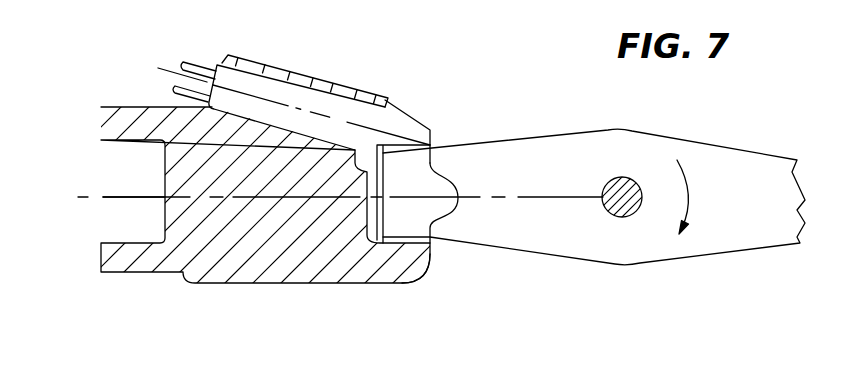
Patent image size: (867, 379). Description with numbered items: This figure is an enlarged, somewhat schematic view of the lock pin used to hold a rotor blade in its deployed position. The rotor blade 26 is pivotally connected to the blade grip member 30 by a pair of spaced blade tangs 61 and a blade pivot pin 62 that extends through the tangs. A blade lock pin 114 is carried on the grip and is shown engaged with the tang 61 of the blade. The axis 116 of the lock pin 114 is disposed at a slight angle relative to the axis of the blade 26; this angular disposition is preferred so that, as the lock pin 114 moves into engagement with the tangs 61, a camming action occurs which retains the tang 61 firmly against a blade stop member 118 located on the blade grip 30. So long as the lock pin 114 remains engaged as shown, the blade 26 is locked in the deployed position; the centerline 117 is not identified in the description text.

The rotor blade 26 is at (747, 157).
The blade grip member 30 is at (212, 283).
The blade tang 61 is at (464, 227).
The blade pivot pin 62 is at (633, 217).
The blade lock pin 114 is at (220, 68).
The axis of the lock pin 116 is at (331, 117).
The bore axis 117 is at (113, 196).
The blade stop member 118 is at (408, 237).